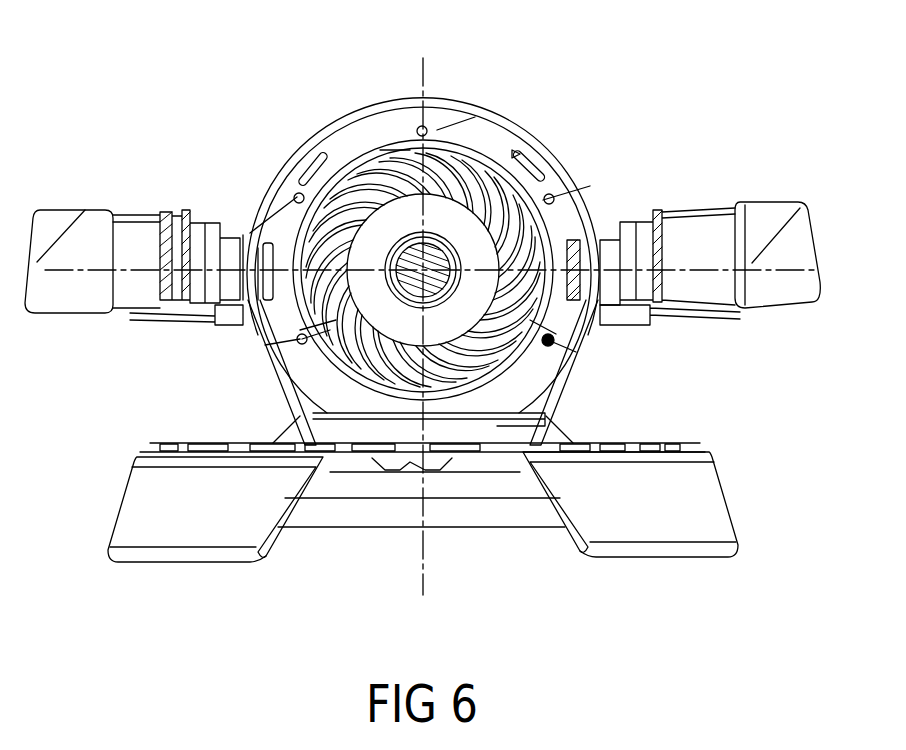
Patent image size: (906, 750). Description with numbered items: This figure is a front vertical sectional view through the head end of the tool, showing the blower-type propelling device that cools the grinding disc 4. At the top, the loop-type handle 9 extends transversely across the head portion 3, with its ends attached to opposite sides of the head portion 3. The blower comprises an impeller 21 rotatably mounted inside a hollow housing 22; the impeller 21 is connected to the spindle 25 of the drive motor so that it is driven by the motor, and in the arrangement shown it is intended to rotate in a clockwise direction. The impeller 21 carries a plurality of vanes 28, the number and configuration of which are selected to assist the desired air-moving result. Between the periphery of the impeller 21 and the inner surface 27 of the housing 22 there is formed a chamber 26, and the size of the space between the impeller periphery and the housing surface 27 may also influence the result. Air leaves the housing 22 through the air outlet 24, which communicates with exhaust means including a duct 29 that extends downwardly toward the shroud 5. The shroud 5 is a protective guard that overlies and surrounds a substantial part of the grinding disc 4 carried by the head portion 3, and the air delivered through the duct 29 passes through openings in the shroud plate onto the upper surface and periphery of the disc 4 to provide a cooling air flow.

The head portion 3 is at (362, 100).
The grinding disc 4 is at (370, 508).
The shroud 5 is at (120, 498).
The handle 9 is at (38, 226).
The impeller 21 is at (550, 245).
The housing 22 is at (502, 139).
The air outlet 24 is at (485, 390).
The spindle 25 is at (414, 287).
The chamber 26 is at (397, 150).
The inner surface 27 is at (412, 152).
The vanes 28 is at (433, 165).
The duct 29 is at (500, 427).